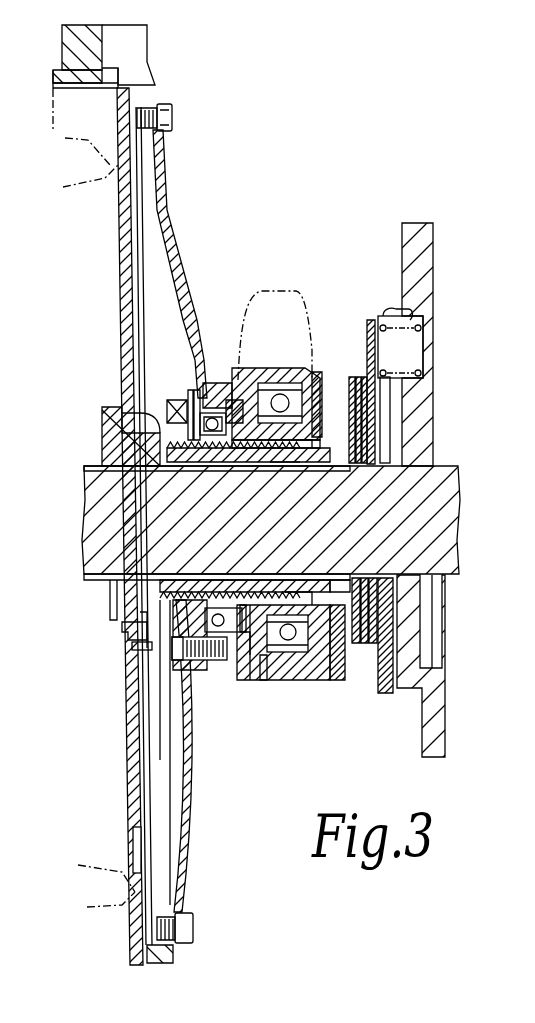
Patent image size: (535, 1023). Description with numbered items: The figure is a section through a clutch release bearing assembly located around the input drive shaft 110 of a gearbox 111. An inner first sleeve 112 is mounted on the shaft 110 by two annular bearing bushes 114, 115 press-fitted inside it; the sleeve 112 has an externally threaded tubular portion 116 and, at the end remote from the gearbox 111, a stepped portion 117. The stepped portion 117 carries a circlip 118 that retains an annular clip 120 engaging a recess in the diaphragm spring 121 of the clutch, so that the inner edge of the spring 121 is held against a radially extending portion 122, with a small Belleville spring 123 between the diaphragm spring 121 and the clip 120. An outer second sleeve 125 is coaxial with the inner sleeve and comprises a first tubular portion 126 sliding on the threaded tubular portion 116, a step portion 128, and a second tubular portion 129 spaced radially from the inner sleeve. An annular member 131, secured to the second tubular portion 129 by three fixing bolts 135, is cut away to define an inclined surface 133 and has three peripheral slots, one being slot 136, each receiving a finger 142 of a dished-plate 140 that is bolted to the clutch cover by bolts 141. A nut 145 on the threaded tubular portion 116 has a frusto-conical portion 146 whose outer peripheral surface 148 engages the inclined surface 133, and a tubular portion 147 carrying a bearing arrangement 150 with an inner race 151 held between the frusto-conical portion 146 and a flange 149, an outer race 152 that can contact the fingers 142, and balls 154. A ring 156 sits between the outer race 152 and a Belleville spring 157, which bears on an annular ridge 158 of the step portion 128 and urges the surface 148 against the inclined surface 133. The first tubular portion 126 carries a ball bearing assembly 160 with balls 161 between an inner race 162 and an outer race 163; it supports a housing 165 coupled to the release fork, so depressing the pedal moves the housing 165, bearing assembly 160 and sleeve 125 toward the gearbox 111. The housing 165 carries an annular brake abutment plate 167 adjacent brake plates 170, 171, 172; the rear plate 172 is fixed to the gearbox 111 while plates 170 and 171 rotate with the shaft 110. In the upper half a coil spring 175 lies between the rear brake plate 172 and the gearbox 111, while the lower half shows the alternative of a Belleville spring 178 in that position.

The input drive shaft 110 is at (428, 482).
The gearbox 111 is at (416, 422).
The inner first sleeve 112 is at (360, 568).
The annular bearing bush 114 is at (158, 576).
The annular bearing bush 115 is at (333, 572).
The tubular portion 116 is at (236, 605).
The stepped portion 117 is at (133, 572).
The circlip 118 is at (145, 637).
The annular clip 120 is at (132, 648).
The diaphragm spring 121 is at (136, 727).
The radially extending portion 122 is at (100, 428).
The small Belleville spring 123 is at (124, 632).
The outer second sleeve 125 is at (285, 470).
The first tubular portion 126 is at (302, 450).
The step portion 128 is at (245, 420).
The second tubular portion 129 is at (213, 385).
The annular member 131 is at (196, 635).
The inclined surface 133 is at (222, 603).
The fixing bolt 135 is at (198, 668).
The slot 136 is at (175, 412).
The dished-plate 140 is at (172, 238).
The bolt 141 is at (172, 110).
The finger 142 is at (192, 392).
The nut 145 is at (193, 467).
The frusto-conical portion 146 is at (184, 460).
The tubular portion 147 is at (210, 450).
The outer peripheral surface 148 is at (132, 466).
The flange 149 is at (232, 455).
The bearing arrangement 150 is at (220, 605).
The inner race 151 is at (285, 605).
The outer race 152 is at (233, 640).
The ball 154 is at (242, 592).
The ring 156 is at (263, 650).
The Belleville spring 157 is at (262, 665).
The annular ridge 158 is at (276, 660).
The ball bearing assembly 160 is at (297, 425).
The ball 161 is at (300, 395).
The inner race 162 is at (312, 445).
The outer race 163 is at (278, 400).
The housing 165 is at (305, 668).
The annular brake abutment plate 167 is at (320, 640).
The brake plate 170 is at (356, 397).
The brake plate 171 is at (386, 462).
The rear brake plate 172 is at (371, 320).
The coil spring 175 is at (412, 320).
The Belleville spring 178 is at (396, 624).